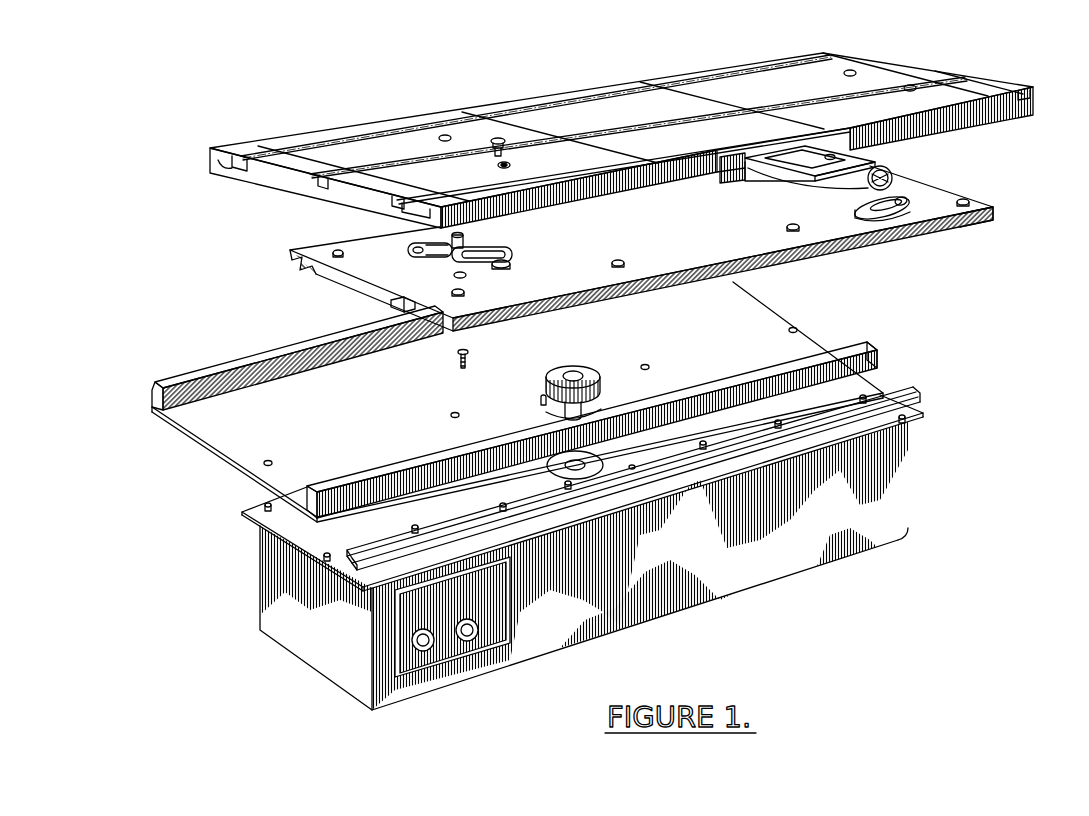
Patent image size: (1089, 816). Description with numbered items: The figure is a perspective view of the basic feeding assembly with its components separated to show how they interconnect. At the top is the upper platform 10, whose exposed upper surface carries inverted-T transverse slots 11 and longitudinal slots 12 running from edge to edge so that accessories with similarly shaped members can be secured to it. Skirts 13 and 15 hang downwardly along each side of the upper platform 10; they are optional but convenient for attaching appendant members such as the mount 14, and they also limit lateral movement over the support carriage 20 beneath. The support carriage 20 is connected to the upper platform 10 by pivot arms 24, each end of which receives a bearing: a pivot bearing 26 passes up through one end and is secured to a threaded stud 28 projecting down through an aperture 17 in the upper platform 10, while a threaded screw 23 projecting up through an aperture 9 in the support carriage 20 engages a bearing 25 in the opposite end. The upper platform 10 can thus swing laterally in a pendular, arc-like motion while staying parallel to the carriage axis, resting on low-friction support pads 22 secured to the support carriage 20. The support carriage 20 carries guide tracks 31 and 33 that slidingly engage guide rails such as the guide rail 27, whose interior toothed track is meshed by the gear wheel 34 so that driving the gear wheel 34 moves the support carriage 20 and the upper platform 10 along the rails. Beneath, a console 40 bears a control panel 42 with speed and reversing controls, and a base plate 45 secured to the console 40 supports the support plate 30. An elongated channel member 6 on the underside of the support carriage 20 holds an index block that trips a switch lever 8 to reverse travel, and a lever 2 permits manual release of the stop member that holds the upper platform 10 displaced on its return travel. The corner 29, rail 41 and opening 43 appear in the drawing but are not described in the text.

The upper platform 10 is at (616, 90).
The transverse slots 11 is at (718, 96).
The longitudinal slots 12 is at (787, 70).
The skirt 13 is at (210, 172).
The skirt 15 is at (1037, 106).
The lever 2 is at (422, 212).
The threaded stud 28 is at (494, 146).
The aperture 17 is at (508, 164).
The mount 14 is at (883, 163).
The support carriage 20 is at (310, 250).
The broken corner of plate 29 is at (316, 276).
The guide rail 27 is at (991, 214).
The support pad 22 is at (799, 230).
The bearing 25 is at (420, 250).
The pivot arm 24 is at (512, 250).
The pivot bearing 26 is at (511, 265).
The aperture 9 is at (455, 276).
The channel member 6 is at (407, 306).
The support plate 30 is at (235, 431).
The guide track 31 is at (198, 388).
The guide track 33 is at (880, 354).
The gear wheel 34 is at (592, 364).
The switch lever 8 is at (543, 398).
The threaded screw 23 is at (462, 368).
The guide rail 41 is at (922, 390).
The base plate 45 is at (300, 535).
The shaft opening 43 is at (603, 461).
The console 40 is at (900, 469).
The control panel 42 is at (440, 638).